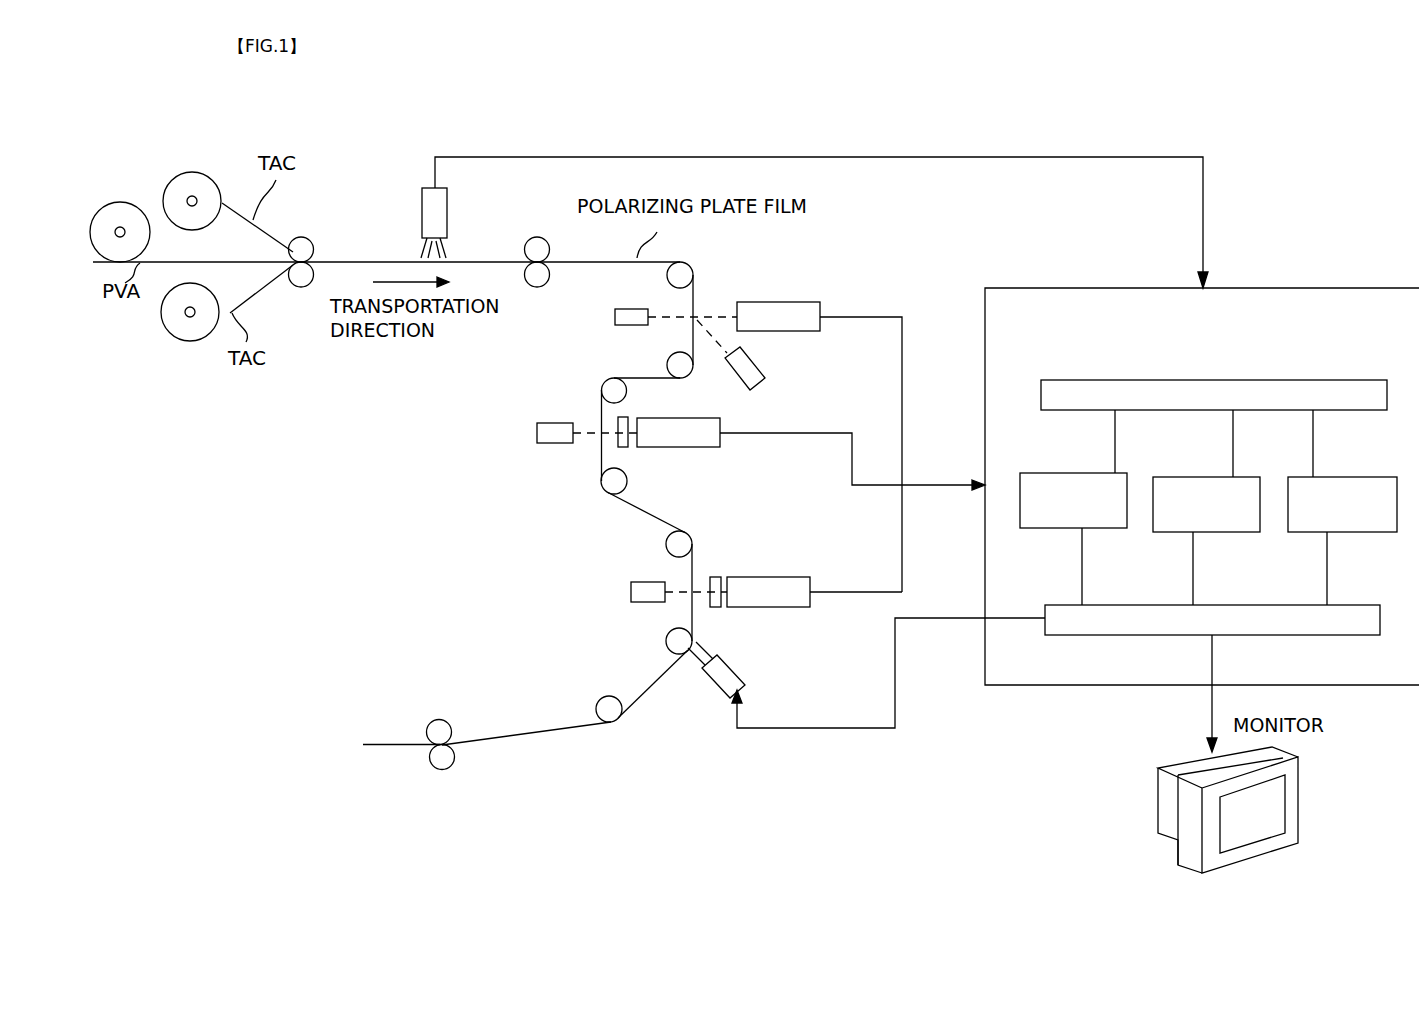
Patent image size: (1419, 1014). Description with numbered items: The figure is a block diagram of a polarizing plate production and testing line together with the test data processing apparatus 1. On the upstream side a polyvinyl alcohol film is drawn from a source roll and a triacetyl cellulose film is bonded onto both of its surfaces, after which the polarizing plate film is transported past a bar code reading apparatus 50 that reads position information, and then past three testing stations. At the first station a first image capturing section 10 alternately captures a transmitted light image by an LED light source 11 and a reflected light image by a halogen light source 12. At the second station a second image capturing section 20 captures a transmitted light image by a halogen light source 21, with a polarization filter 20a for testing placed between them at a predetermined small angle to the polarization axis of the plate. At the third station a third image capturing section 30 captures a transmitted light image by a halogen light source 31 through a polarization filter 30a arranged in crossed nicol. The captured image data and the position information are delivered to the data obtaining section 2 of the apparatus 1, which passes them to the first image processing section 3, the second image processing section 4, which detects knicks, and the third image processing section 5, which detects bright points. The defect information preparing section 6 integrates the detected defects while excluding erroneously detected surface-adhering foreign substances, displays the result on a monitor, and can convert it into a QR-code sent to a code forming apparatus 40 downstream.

The test data processing apparatus 1 is at (1253, 287).
The data obtaining section 2 is at (1215, 380).
The first image processing section 3 is at (1075, 472).
The second image processing section 4 is at (1207, 477).
The third image processing section 5 is at (1342, 477).
The defect information preparing section 6 is at (1213, 605).
The first image capturing section 10 is at (777, 302).
The LED light source 11 is at (615, 317).
The halogen light source 12 is at (755, 387).
The second image capturing section 20 is at (677, 448).
The polarization filter for testing 20a is at (623, 417).
The halogen light source 21 is at (537, 432).
The third image capturing section 30 is at (770, 577).
The polarization filter for testing 30a is at (718, 577).
The halogen light source 31 is at (631, 597).
The code forming apparatus 40 is at (735, 670).
The bar code reading apparatus 50 is at (420, 212).